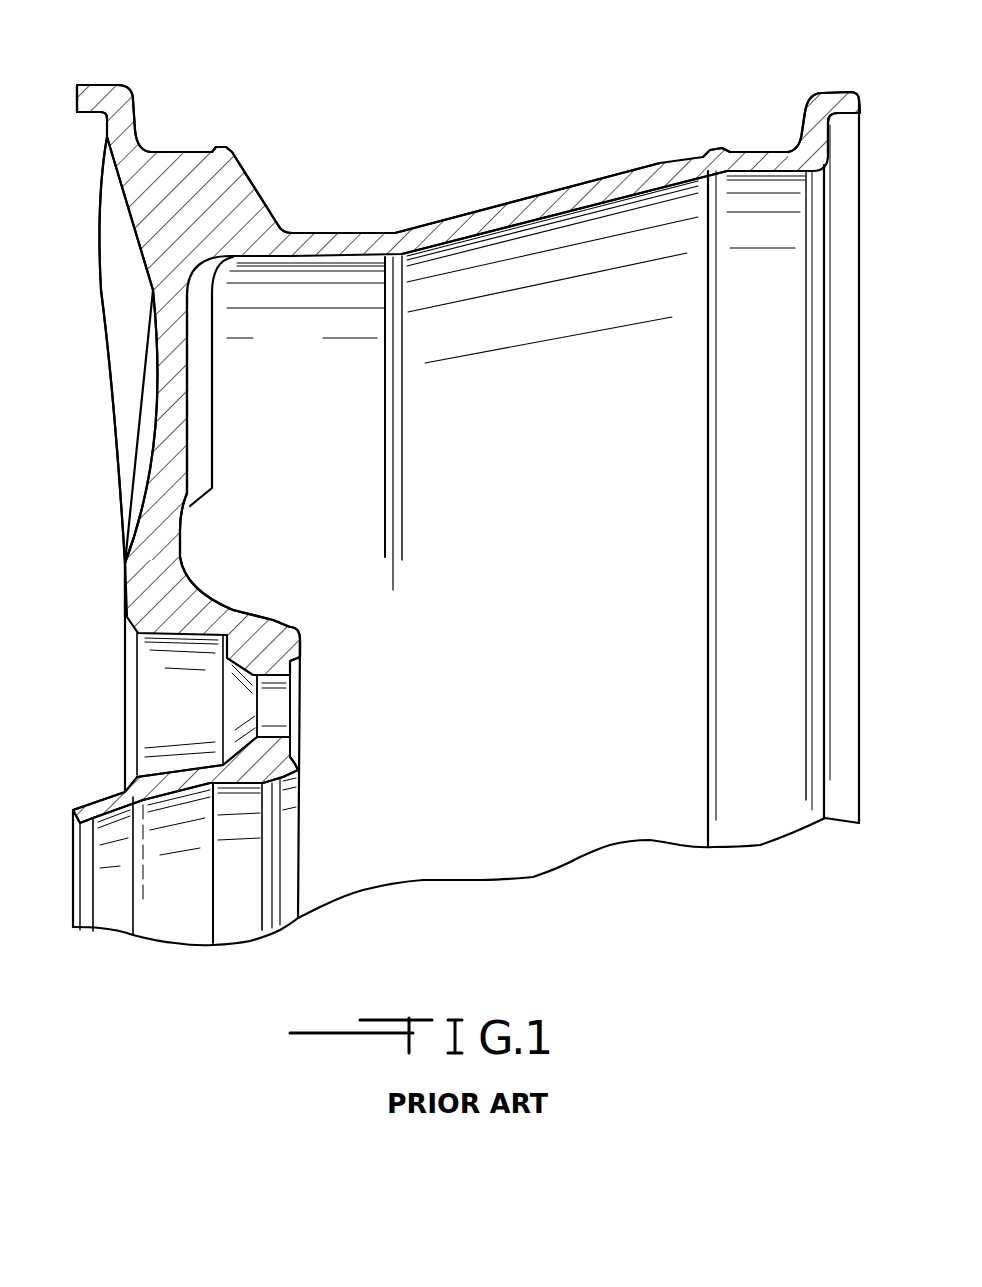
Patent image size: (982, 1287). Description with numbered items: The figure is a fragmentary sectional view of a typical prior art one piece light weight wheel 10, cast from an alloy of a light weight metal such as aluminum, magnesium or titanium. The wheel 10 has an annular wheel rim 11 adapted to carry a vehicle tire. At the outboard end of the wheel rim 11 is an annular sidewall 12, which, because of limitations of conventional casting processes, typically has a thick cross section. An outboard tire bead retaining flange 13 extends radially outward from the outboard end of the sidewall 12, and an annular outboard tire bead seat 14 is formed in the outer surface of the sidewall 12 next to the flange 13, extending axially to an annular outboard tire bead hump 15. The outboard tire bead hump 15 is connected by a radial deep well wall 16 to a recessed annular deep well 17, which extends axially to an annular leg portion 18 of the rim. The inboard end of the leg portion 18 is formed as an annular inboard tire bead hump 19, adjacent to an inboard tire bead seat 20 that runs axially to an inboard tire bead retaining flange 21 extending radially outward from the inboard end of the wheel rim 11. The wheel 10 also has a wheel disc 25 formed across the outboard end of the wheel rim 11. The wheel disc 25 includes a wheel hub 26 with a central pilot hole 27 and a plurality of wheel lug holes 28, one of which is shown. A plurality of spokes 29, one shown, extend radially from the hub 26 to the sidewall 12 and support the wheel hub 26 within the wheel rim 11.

The one piece light weight wheel 10 is at (415, 160).
The wheel rim 11 is at (476, 180).
The sidewall 12 is at (163, 224).
The outboard tire bead retaining flange 13 is at (103, 93).
The outboard tire bead seat 14 is at (167, 150).
The outboard tire bead hump 15 is at (227, 150).
The radial deep well wall 16 is at (250, 172).
The deep well 17 is at (337, 231).
The leg portion 18 is at (570, 186).
The inboard tire bead hump 19 is at (712, 150).
The inboard tire bead seat 20 is at (759, 150).
The inboard tire bead retaining flange 21 is at (820, 103).
The wheel disc 25 is at (103, 563).
The wheel hub 26 is at (273, 637).
The central pilot hole 27 is at (310, 860).
The wheel lug holes 28 is at (310, 694).
The spokes 29 is at (178, 375).